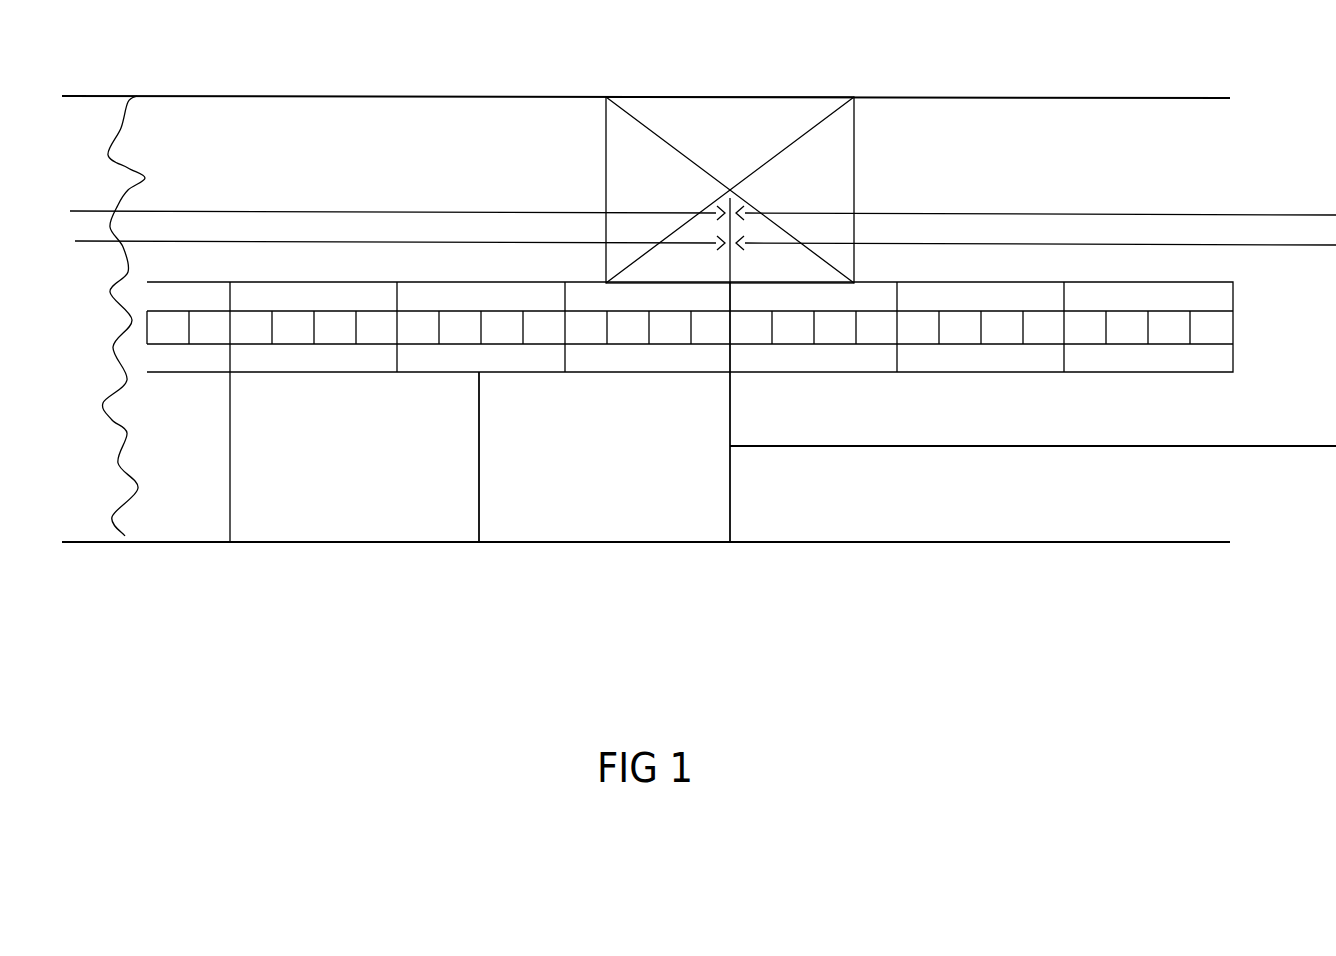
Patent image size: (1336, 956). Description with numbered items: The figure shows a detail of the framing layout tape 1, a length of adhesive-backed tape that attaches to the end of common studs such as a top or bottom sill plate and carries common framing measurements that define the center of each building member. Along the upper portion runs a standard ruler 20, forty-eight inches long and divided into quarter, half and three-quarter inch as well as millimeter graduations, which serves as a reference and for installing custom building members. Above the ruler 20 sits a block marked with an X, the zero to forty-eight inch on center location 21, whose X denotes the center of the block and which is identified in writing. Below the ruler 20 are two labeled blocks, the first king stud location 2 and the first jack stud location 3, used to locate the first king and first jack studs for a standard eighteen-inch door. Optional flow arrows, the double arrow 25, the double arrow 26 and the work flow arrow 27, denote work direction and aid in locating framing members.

The framing layout tape 1 is at (456, 97).
The first king stud location 2 is at (345, 543).
The first jack stud location 3 is at (563, 543).
The standard ruler 20 is at (937, 346).
The zero to forty-eight inch on center location 21 is at (732, 97).
The double arrow for twelve inch on center location 25 is at (936, 245).
The double arrow for sixteen inch on center location 26 is at (1068, 215).
The work flow arrow 27 is at (1097, 452).